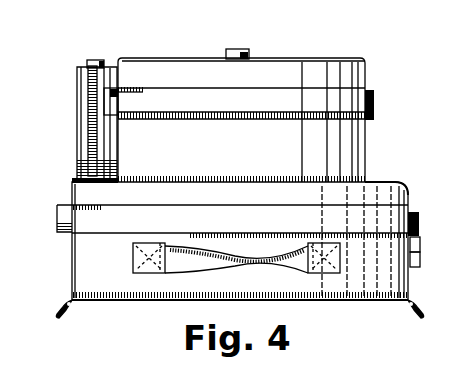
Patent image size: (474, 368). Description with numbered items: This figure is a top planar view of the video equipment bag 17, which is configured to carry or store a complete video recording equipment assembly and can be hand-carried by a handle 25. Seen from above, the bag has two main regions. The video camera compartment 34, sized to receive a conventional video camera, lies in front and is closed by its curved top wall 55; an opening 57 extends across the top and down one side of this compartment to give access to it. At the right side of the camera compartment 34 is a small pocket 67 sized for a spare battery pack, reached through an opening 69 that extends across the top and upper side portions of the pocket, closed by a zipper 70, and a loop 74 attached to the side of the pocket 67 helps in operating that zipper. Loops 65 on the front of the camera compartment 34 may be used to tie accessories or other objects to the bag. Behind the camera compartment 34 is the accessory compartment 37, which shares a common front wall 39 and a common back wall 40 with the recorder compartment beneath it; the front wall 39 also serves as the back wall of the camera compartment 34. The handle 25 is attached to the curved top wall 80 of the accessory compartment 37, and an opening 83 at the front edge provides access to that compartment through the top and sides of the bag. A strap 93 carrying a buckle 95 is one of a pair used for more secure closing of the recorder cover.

The video equipment bag 17 is at (140, 36).
The loop 74 is at (94, 60).
The zipper 70 is at (97, 90).
The opening 69 is at (90, 113).
The small pocket 67 is at (80, 142).
The opening 57 is at (183, 88).
The loops 65 is at (241, 49).
The video camera compartment 34 is at (290, 70).
The curved top wall 55 is at (273, 138).
The common front wall 39 is at (375, 180).
The buckle 95 is at (422, 242).
The strap 93 is at (415, 270).
The opening 83 is at (128, 205).
The handle 25 is at (232, 266).
The common back wall 40 is at (112, 300).
The curved top wall 80 is at (245, 290).
The accessory compartment 37 is at (352, 300).